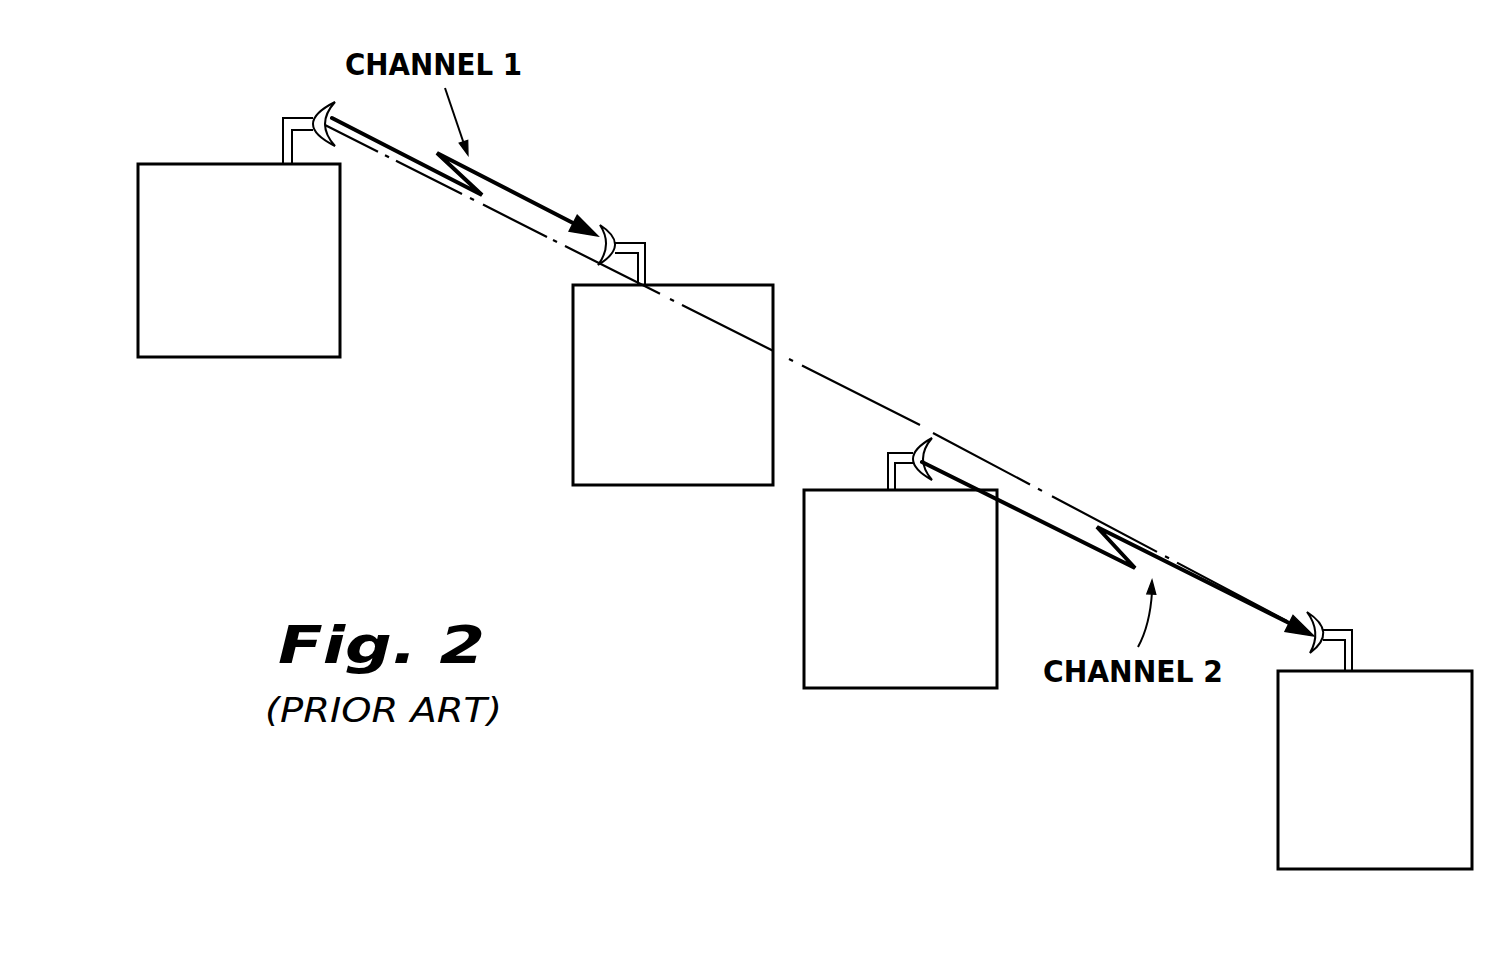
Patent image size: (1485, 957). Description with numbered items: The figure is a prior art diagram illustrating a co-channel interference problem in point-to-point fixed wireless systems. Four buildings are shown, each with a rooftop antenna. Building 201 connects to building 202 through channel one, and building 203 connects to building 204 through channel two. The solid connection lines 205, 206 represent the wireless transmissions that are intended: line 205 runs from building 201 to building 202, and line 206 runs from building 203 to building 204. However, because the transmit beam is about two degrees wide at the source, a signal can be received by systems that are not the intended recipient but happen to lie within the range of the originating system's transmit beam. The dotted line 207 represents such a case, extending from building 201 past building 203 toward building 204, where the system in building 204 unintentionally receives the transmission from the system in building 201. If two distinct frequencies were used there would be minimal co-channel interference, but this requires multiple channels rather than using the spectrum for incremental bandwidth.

The building 201 is at (184, 152).
The building 202 is at (712, 263).
The building 203 is at (839, 479).
The building 204 is at (1426, 655).
The solid connection line 205 is at (545, 205).
The solid connection line 206 is at (1053, 530).
The dotted line 207 is at (1230, 585).